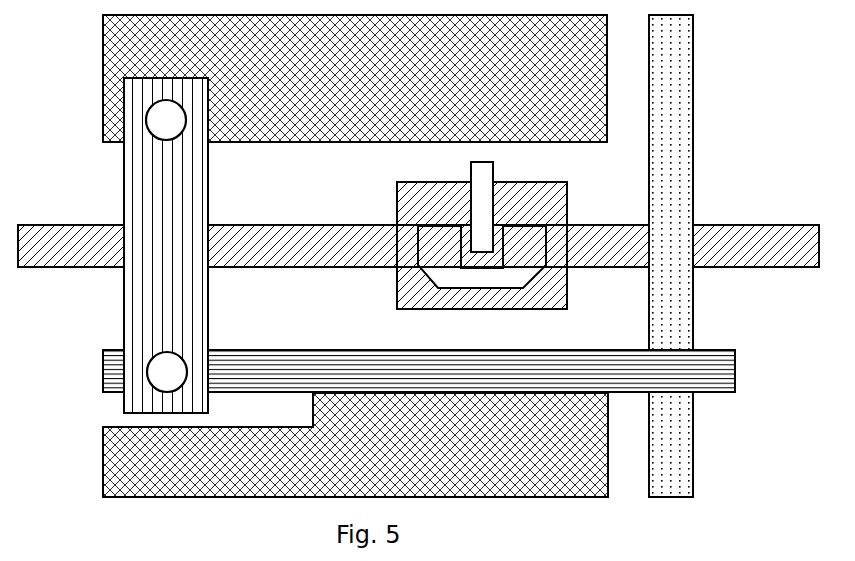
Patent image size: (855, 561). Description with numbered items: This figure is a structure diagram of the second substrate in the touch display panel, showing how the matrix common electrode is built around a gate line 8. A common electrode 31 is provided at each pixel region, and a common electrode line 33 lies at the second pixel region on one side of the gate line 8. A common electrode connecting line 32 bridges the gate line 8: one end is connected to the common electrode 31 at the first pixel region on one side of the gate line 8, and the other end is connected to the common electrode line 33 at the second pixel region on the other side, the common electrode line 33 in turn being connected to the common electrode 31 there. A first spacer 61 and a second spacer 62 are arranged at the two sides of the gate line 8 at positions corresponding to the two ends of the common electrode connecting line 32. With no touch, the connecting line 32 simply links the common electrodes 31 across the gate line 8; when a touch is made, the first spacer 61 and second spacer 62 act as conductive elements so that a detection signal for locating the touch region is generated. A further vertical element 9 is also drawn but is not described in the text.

The common electrode 31 is at (103, 57).
The common electrode connecting line 32 is at (166, 183).
The common electrode line 33 is at (103, 350).
The first spacer 61 is at (166, 120).
The second spacer 62 is at (167, 372).
The gate line 8 is at (756, 245).
The vertical bar 9 is at (670, 140).